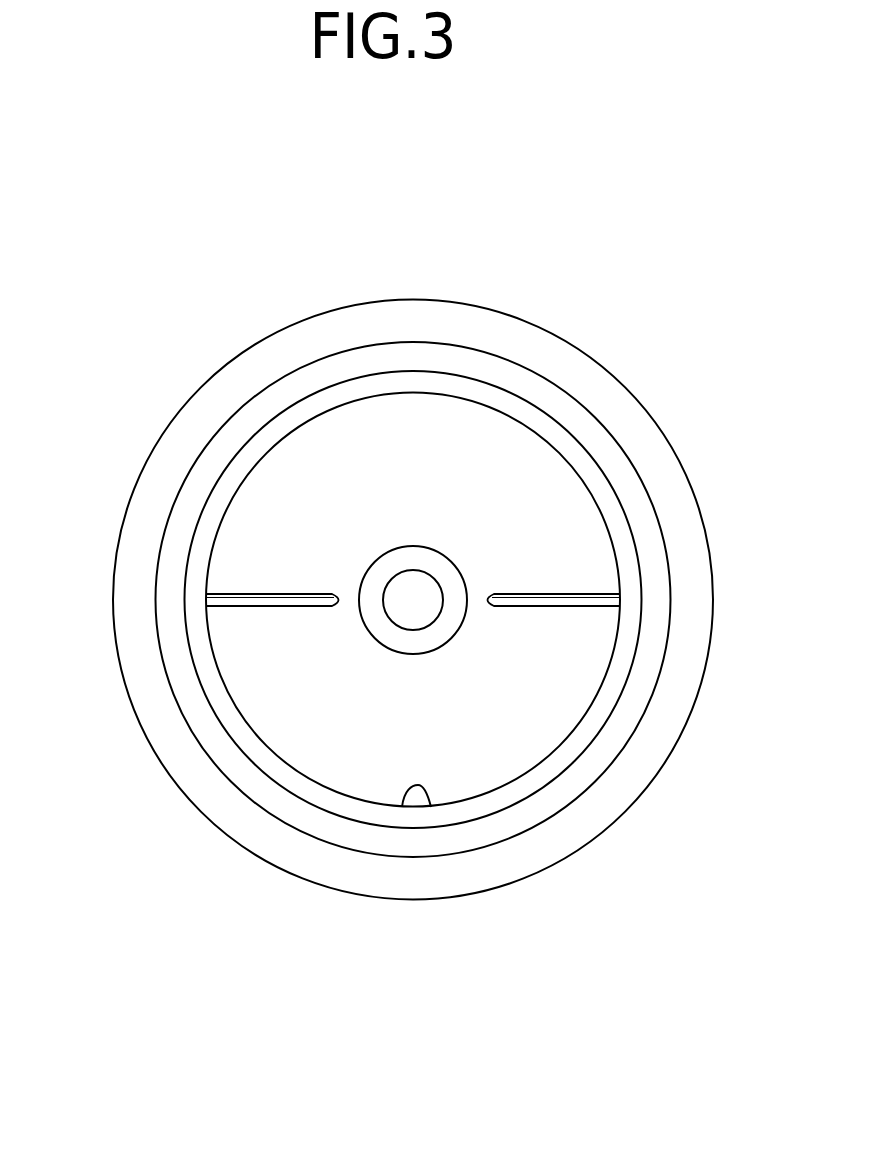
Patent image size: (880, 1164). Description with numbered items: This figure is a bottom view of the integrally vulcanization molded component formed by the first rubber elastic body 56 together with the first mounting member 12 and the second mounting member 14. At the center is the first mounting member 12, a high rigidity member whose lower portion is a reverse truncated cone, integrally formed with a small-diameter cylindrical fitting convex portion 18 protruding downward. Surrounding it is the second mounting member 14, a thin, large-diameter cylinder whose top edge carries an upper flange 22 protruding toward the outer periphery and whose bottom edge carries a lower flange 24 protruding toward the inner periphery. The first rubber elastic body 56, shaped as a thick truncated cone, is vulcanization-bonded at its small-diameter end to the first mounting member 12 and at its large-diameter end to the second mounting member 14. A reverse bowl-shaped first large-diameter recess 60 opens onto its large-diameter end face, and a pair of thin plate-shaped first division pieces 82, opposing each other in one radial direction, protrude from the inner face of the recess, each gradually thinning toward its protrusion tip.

The first mounting member 12 is at (383, 563).
The second mounting member 14 is at (131, 485).
The fitting convex portion 18 is at (413, 598).
The upper flange 22 is at (603, 803).
The lower flange 24 is at (290, 808).
The first rubber elastic body 56 is at (546, 527).
The first large-diameter recess 60 is at (422, 789).
The first division piece 82 is at (230, 602).